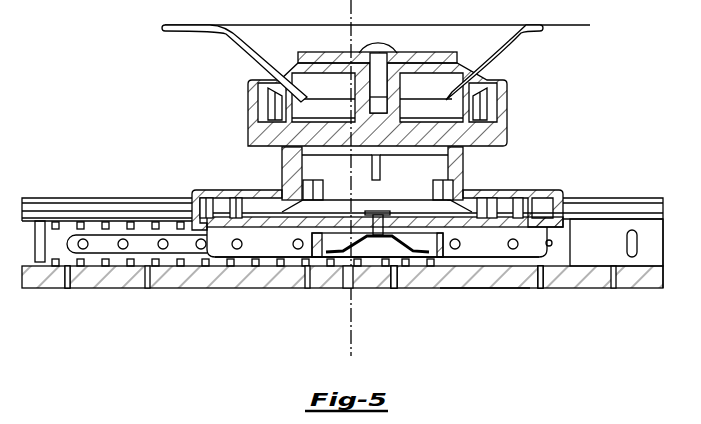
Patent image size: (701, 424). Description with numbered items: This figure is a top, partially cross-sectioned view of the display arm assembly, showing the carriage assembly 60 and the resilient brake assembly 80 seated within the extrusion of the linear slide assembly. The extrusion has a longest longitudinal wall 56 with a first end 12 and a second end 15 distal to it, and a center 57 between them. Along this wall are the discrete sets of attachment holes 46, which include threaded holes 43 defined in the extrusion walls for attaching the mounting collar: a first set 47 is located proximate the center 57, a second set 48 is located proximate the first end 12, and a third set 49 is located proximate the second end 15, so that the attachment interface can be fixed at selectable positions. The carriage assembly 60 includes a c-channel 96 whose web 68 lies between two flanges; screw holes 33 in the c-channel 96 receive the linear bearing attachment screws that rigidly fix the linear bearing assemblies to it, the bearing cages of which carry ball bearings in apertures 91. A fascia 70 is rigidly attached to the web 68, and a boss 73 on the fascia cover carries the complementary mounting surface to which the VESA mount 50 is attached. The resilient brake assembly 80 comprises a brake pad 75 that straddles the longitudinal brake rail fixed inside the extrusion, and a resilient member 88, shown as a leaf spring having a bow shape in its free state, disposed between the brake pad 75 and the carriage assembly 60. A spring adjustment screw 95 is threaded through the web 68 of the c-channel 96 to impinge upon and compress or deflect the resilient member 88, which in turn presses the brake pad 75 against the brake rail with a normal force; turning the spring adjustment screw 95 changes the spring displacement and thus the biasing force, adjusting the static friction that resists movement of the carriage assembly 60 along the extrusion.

The first end 12 is at (668, 284).
The second end 15 is at (24, 283).
The screw holes 33 is at (297, 241).
The threaded holes 43 is at (66, 283).
The discrete sets of attachment holes 46 is at (66, 283).
The first set of attachment holes 47 is at (306, 285).
The second set of attachment holes 48 is at (538, 282).
The third set of attachment holes 49 is at (68, 278).
The VESA mount 50 is at (514, 122).
The longest longitudinal wall 56 is at (485, 290).
The center 57 is at (349, 348).
The carriage assembly 60 is at (235, 185).
The web 68 is at (264, 218).
The fascia 70 is at (548, 186).
The boss 73 is at (472, 172).
The brake pad 75 is at (316, 260).
The resilient brake assembly 80 is at (454, 256).
The resilient member 88 is at (366, 248).
The apertures 91 is at (106, 268).
The spring adjustment screw 95 is at (377, 212).
The c-channel 96 is at (265, 258).